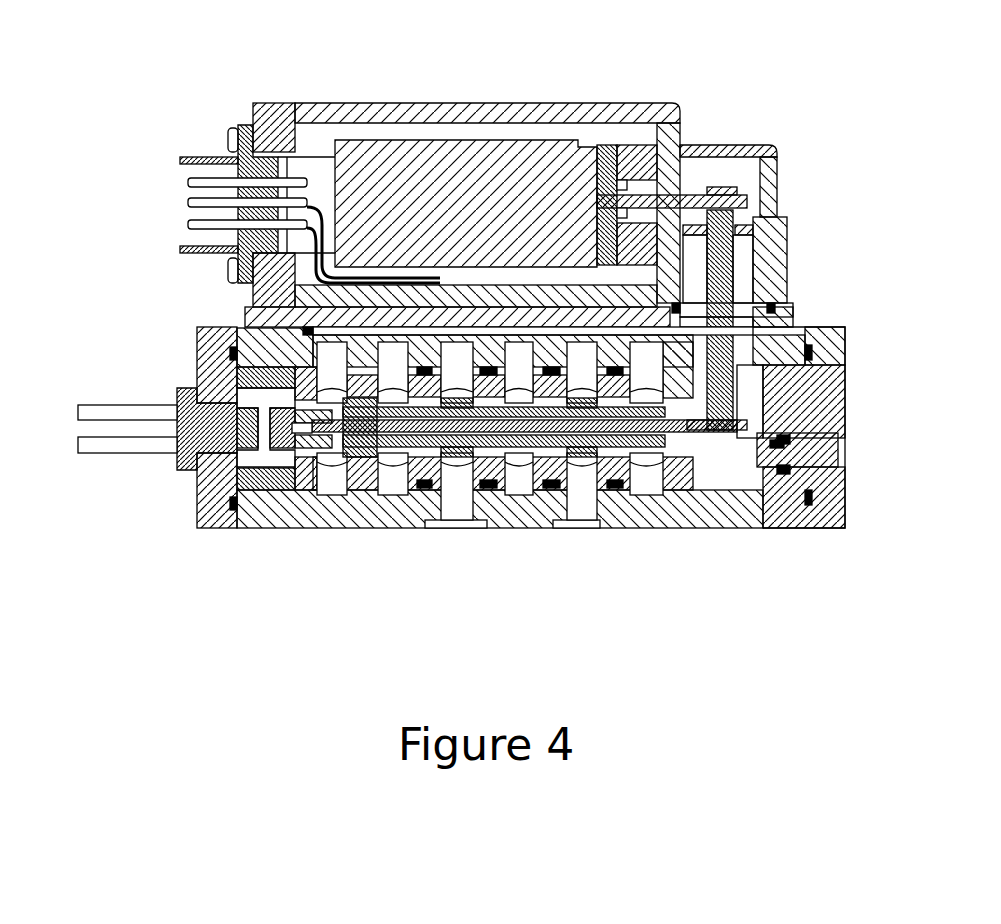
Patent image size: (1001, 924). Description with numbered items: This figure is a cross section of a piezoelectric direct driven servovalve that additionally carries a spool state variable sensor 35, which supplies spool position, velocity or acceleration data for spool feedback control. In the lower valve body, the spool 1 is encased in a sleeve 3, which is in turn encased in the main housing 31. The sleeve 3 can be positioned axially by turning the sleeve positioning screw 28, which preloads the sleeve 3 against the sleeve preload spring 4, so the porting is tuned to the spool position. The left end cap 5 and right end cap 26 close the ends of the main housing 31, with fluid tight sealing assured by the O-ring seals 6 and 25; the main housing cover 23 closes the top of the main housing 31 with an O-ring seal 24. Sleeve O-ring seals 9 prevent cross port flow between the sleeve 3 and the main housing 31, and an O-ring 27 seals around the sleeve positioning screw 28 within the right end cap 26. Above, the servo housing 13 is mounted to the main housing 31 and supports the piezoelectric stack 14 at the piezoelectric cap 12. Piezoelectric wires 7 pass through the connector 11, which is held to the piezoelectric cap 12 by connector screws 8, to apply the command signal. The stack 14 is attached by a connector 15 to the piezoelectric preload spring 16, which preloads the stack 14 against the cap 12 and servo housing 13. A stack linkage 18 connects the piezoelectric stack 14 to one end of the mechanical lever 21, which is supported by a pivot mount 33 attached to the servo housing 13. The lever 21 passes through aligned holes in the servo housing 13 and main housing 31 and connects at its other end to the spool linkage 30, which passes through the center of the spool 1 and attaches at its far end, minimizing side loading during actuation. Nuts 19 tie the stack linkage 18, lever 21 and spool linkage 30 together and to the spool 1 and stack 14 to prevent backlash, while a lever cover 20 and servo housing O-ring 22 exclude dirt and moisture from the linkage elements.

The spool 1 is at (337, 447).
The sleeve 3 is at (257, 478).
The sleeve preload spring 4 is at (233, 490).
The left end cap 5 is at (197, 368).
The O-ring seal 6 is at (233, 353).
The piezoelectric wires 7 is at (310, 283).
The connector screws 8 is at (230, 270).
The sleeve O-ring seals 9 is at (612, 490).
The connector 11 is at (247, 170).
The piezoelectric cap 12 is at (272, 103).
The servo housing 13 is at (430, 100).
The piezoelectric stack 14 is at (532, 163).
The connector 15 is at (607, 158).
The piezoelectric preload spring 16 is at (647, 157).
The stack linkage 18 is at (690, 190).
The nuts 19 is at (655, 183).
The lever cover 20 is at (778, 215).
The mechanical lever 21 is at (720, 290).
The servo housing O-ring 22 is at (760, 316).
The main housing cover 23 is at (795, 318).
The O-ring seal 24 is at (770, 332).
The O-ring seal 25 is at (808, 355).
The right end cap 26 is at (845, 410).
The O-ring 27 is at (800, 462).
The sleeve positioning screw 28 is at (808, 478).
The spool linkage 30 is at (737, 443).
The main housing 31 is at (630, 528).
The pivot mount 33 is at (750, 238).
The spool state variable sensor 35 is at (217, 433).